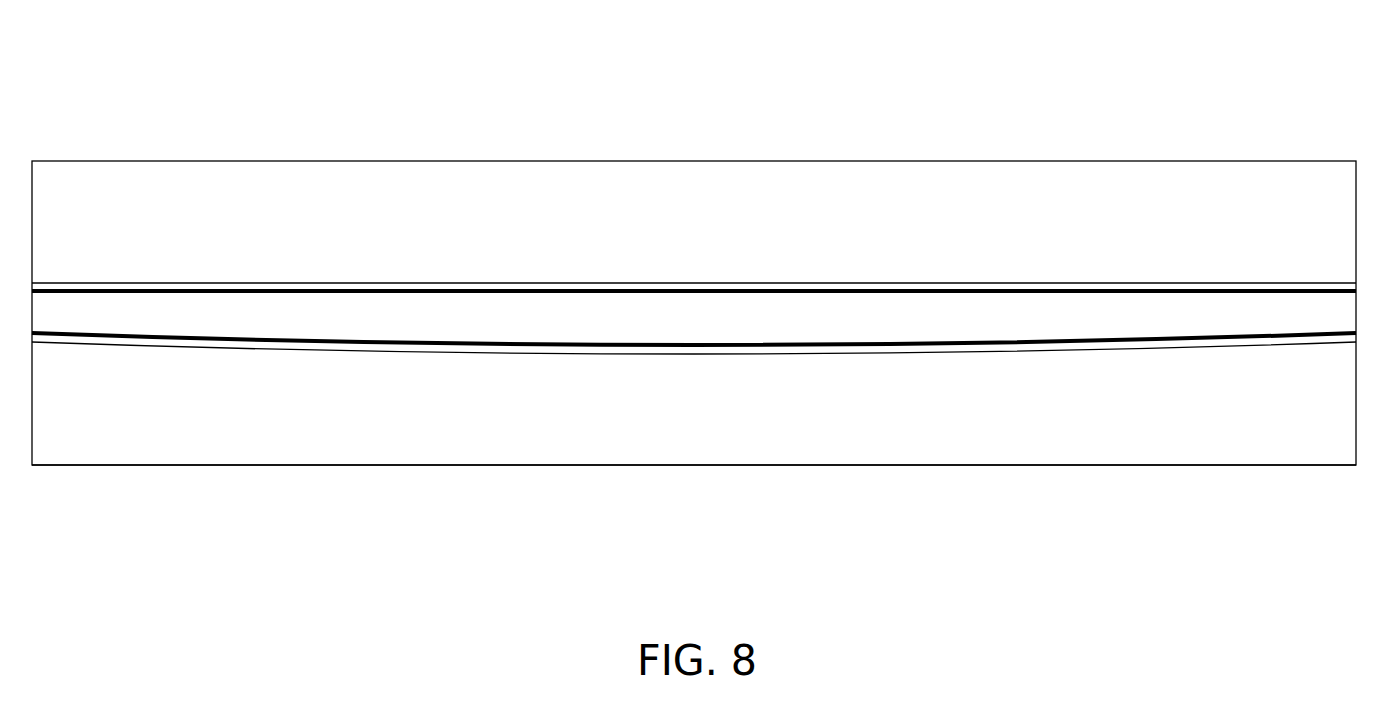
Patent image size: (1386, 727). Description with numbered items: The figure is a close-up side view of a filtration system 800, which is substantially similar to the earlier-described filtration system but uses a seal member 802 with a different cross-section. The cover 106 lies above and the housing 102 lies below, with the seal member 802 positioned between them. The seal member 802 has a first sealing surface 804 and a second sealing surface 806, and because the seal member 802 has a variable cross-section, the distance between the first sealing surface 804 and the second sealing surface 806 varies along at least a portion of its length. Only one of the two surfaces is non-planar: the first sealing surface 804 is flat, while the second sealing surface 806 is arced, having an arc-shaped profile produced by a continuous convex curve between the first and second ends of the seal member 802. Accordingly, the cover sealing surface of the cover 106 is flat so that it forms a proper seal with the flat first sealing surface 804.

The filtration system 800 is at (130, 115).
The cover 106 is at (668, 178).
The first sealing surface 804 is at (324, 285).
The seal member 802 is at (938, 313).
The second sealing surface 806 is at (328, 342).
The housing 102 is at (709, 451).